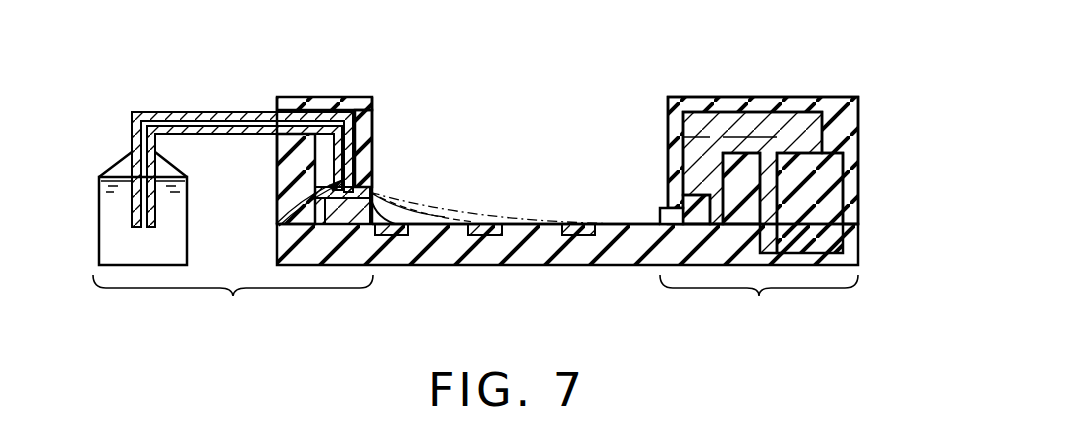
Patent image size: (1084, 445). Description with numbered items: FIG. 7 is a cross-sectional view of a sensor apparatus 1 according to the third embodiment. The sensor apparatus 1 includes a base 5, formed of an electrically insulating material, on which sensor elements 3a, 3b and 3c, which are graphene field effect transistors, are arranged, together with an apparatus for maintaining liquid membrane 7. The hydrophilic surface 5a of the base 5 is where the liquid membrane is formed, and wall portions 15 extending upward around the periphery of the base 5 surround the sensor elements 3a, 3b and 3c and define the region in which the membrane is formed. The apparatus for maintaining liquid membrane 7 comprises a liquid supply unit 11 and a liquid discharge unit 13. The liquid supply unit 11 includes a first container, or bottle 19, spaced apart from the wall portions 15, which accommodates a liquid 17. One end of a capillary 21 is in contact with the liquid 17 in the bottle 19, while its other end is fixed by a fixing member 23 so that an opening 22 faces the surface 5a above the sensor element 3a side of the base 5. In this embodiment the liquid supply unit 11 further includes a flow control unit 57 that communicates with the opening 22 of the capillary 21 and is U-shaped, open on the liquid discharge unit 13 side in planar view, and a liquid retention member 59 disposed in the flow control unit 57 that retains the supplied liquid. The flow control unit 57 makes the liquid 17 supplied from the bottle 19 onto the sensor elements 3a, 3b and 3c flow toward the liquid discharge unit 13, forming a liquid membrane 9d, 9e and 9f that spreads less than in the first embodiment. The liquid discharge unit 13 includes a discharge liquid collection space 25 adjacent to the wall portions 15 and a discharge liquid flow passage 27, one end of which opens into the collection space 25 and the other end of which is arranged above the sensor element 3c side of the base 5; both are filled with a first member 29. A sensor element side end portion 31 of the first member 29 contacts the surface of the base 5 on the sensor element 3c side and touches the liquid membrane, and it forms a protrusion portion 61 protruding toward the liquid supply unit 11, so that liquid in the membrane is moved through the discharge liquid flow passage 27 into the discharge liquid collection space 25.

The sensor apparatus 1 is at (188, 75).
The sensor element 3a is at (390, 236).
The sensor element 3b is at (483, 236).
The sensor element 3c is at (575, 236).
The base 5 is at (633, 266).
The surface of the base 5a is at (645, 222).
The apparatus for maintaining liquid membrane 7 is at (475, 305).
The liquid membrane 9d is at (393, 205).
The liquid membrane 9e is at (443, 217).
The liquid membrane 9f is at (553, 218).
The liquid supply unit 11 is at (88, 167).
The liquid discharge unit 13 is at (908, 132).
The wall portion 15 is at (277, 181).
The liquid 17 is at (152, 258).
The first container (bottle) 19 is at (115, 265).
The capillary 21 is at (130, 113).
The opening 22 is at (277, 223).
The fixing member 23 is at (277, 145).
The discharge liquid collection space 25 is at (835, 178).
The discharge liquid flow passage 27 is at (830, 123).
The first member 29 is at (830, 217).
The sensor element side end portion 31 is at (695, 215).
The flow control unit 57 is at (320, 200).
The liquid retention member 59 is at (353, 205).
The protrusion portion 61 is at (665, 206).